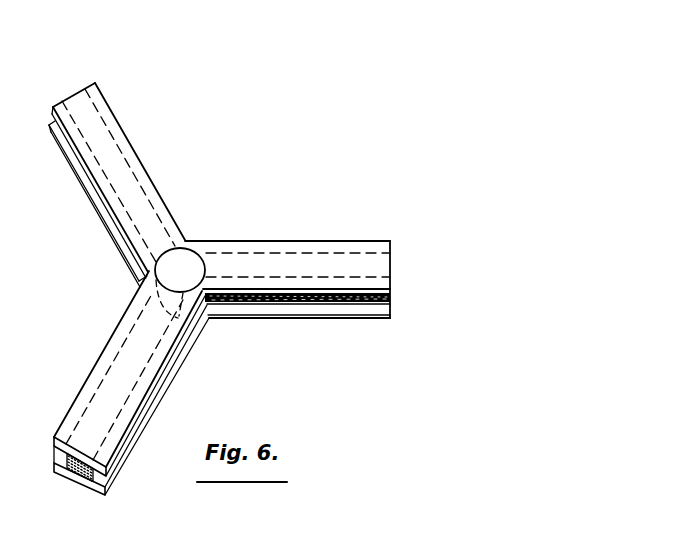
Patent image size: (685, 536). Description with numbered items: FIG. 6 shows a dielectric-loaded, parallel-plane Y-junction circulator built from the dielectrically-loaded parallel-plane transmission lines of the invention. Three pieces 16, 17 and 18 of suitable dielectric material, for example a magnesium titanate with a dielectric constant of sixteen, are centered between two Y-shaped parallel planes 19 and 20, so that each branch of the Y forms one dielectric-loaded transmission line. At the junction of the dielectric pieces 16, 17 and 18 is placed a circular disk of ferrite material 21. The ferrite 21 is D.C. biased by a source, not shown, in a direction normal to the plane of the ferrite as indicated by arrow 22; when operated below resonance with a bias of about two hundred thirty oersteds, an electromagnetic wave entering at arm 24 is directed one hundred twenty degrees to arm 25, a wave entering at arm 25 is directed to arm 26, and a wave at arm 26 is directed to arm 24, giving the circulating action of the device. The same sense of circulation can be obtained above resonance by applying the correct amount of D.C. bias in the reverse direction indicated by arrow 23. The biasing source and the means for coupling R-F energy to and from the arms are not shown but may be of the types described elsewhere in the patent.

The dielectric piece 16 is at (136, 342).
The dielectric piece 17 is at (300, 257).
The dielectric piece 18 is at (118, 158).
The Y-shaped parallel plane 19 is at (63, 410).
The Y-shaped parallel plane 20 is at (108, 473).
The ferrite disk 21 is at (185, 258).
The bias direction arrow 22 is at (182, 214).
The reverse bias direction arrow 23 is at (207, 335).
The arm 24 is at (78, 472).
The arm 25 is at (392, 291).
The arm 26 is at (70, 97).